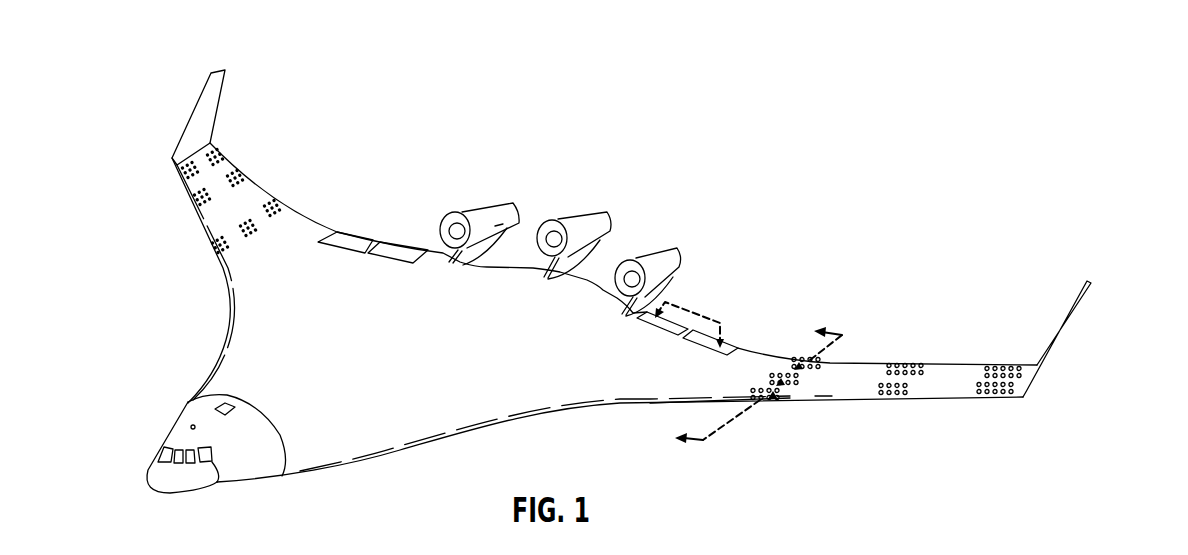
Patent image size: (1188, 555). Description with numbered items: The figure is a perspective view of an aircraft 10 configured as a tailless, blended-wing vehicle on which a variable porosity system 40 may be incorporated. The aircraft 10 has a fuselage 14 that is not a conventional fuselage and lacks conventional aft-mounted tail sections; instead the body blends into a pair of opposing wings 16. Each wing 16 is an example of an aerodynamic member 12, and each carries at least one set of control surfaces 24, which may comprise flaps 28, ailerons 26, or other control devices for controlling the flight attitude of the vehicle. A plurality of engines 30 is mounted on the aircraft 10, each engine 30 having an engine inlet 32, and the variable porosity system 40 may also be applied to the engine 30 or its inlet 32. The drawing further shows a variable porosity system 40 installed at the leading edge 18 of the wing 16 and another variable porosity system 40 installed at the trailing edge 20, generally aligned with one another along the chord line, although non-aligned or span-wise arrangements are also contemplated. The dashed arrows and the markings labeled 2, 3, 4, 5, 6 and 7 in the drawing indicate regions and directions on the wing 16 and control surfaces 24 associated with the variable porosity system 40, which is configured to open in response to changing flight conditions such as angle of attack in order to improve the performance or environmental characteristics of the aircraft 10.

The aircraft 10 is at (688, 130).
The aerodynamic member 12 is at (597, 392).
The fuselage 14 is at (267, 398).
The wing 16 is at (863, 383).
The leading edge 18 is at (192, 212).
The trailing edge 20 is at (238, 175).
The control surface 24 is at (558, 258).
The aileron 26 is at (558, 258).
The flap 28 is at (392, 245).
The engine 30 is at (493, 203).
The engine inlet 32 is at (455, 228).
The variable porosity system 40 is at (247, 220).
The motion direction 2 is at (784, 388).
The motion direction 3 is at (784, 388).
The motion direction 4 is at (784, 388).
The motion direction 5 is at (784, 388).
The motion direction 6 is at (784, 388).
The motion direction 7 is at (784, 388).